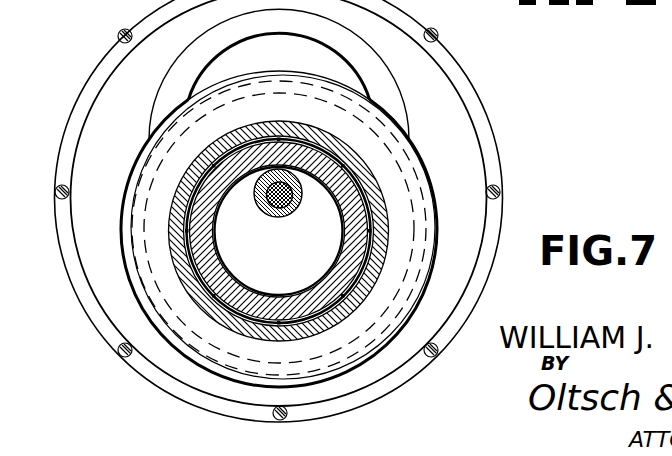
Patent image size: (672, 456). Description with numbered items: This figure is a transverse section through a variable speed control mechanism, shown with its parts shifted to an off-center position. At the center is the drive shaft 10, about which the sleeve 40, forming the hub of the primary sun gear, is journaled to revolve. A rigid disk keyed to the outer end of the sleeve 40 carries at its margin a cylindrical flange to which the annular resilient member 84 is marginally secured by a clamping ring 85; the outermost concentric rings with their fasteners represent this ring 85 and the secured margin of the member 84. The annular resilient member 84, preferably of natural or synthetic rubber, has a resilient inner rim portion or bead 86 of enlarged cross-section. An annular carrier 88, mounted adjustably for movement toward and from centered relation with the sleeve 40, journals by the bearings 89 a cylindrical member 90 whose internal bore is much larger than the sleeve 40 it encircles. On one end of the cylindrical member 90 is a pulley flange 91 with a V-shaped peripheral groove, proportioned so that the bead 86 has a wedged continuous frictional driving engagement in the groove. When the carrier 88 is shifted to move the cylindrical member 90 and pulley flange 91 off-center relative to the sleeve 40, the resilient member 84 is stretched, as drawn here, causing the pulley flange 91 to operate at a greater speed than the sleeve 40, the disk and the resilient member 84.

The drive shaft 10 is at (268, 207).
The sleeve 40 is at (290, 210).
The annular resilient member 84 is at (449, 127).
The clamping ring 85 is at (463, 80).
The inner bead 86 is at (358, 77).
The annular carrier 88 is at (328, 305).
The bearings 89 is at (281, 137).
The cylindrical member 90 is at (228, 284).
The pulley flange 91 is at (425, 214).